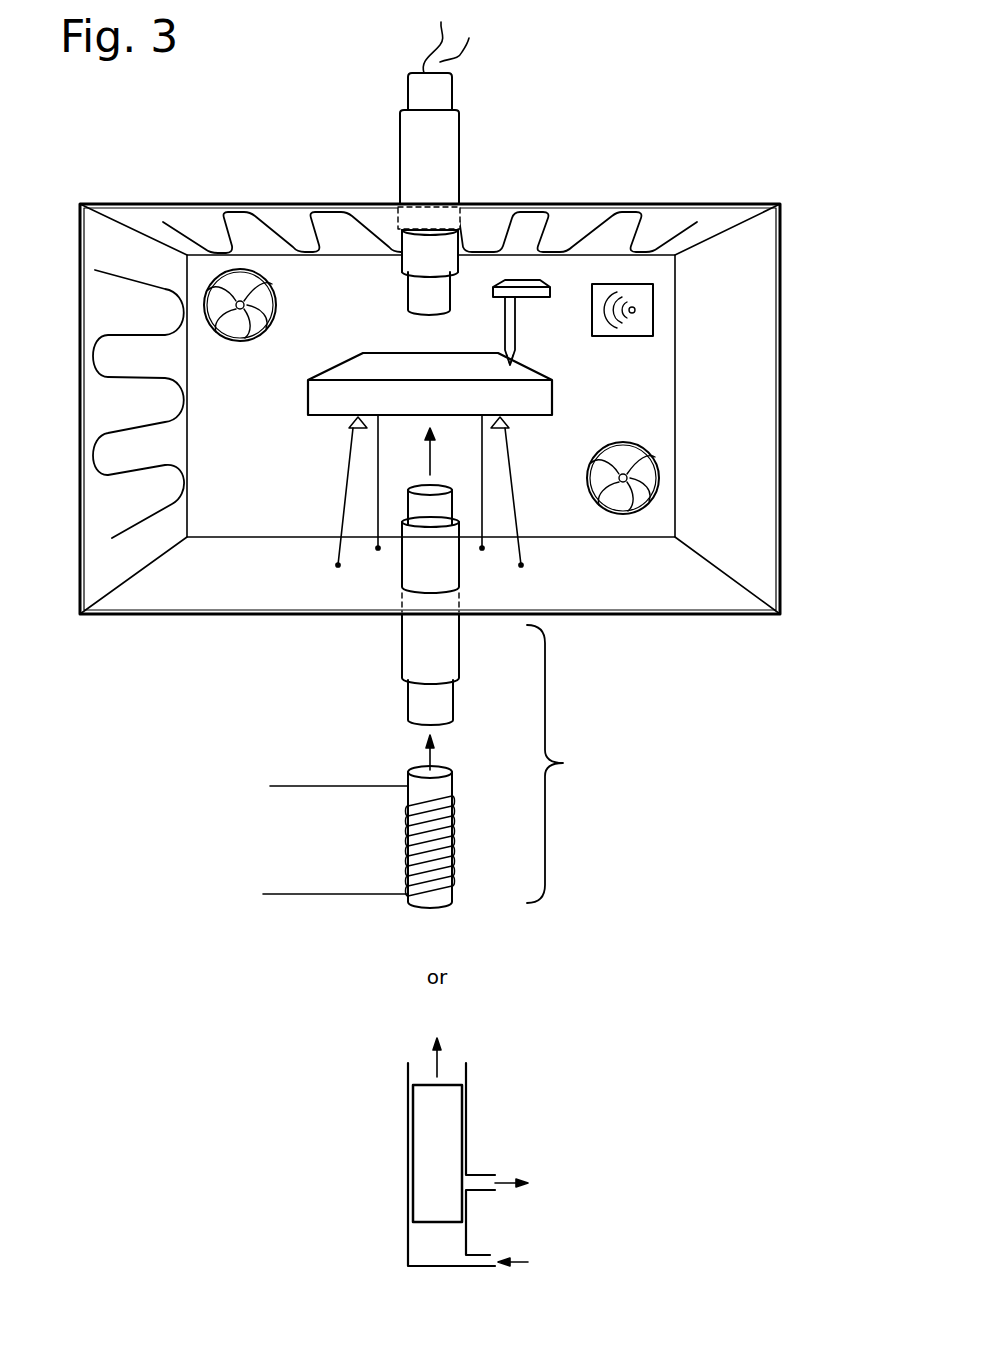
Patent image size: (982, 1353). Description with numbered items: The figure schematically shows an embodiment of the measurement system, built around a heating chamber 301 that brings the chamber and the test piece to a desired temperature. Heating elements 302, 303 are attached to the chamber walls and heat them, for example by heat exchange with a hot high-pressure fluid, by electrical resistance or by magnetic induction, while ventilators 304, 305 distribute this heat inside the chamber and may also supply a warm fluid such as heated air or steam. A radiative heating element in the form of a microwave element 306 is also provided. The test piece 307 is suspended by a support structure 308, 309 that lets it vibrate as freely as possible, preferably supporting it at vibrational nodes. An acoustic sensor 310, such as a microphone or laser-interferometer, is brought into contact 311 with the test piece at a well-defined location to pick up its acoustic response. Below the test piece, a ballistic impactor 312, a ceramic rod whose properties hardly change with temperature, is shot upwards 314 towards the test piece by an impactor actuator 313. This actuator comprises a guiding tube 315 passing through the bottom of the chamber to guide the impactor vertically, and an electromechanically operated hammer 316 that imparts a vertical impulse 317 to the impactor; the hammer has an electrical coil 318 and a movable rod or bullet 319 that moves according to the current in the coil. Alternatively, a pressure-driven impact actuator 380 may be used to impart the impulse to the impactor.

The heating chamber 301 is at (745, 318).
The heating element 302 is at (134, 525).
The heating element 303 is at (560, 224).
The ventilator 304 is at (642, 470).
The ventilator 305 is at (257, 290).
The microwave element 306 is at (650, 294).
The test piece 307 is at (390, 367).
The support structure 308 is at (350, 425).
The support structure 309 is at (510, 424).
The acoustic sensor 310 is at (441, 141).
The contact 311 is at (508, 362).
The ballistic impactor 312 is at (440, 508).
The impactor actuator 313 is at (568, 764).
The upward shooting direction 314 is at (430, 457).
The guiding tube 315 is at (426, 642).
The electromechanically operated hammer 316 is at (413, 913).
The impulse 317 is at (436, 754).
The electrical coil 318 is at (404, 787).
The movable rod or bullet 319 is at (440, 788).
The pressure-driven impact actuator 380 is at (466, 1112).